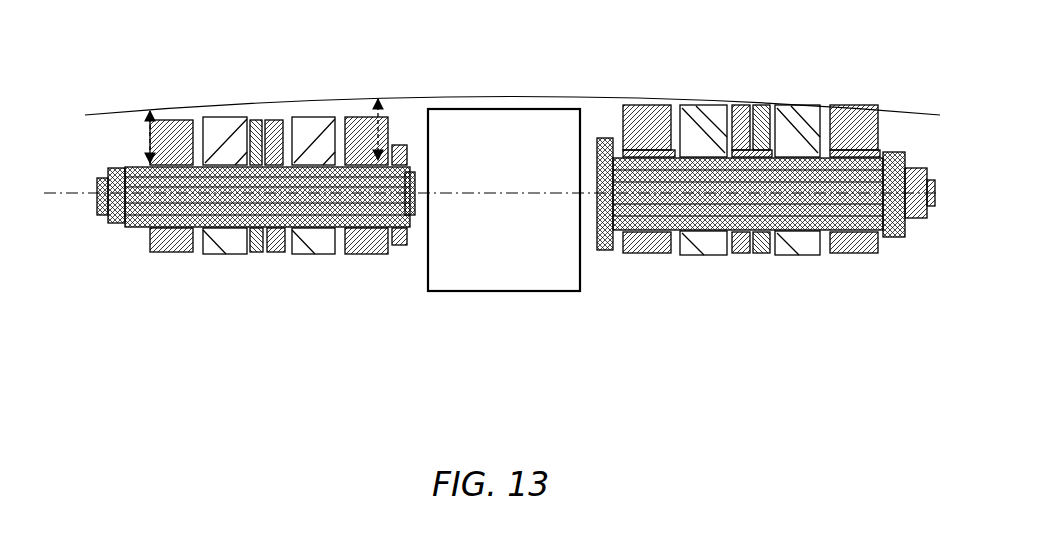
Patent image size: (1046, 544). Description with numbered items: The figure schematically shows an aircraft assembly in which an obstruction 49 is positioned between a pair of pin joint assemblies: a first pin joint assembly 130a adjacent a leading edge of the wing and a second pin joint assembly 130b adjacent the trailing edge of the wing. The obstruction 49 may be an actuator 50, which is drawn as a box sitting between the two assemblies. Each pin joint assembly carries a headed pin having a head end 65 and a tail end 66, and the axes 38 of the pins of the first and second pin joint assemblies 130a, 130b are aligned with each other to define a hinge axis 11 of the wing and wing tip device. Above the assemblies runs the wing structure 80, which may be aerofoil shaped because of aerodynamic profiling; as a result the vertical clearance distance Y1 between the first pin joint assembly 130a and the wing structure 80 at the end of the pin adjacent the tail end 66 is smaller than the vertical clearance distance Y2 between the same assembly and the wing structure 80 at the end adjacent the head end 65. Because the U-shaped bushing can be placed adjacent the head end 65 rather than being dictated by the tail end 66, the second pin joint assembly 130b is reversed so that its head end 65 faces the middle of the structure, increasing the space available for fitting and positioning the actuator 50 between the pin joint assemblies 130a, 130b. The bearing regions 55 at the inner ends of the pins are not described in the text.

The hinge axis 11 is at (297, 188).
The axis 38 is at (85, 192).
The obstruction 49 is at (523, 265).
The actuator 50 is at (503, 133).
The bearing 55 is at (415, 178).
The head end 65 is at (392, 210).
The tail end 66 is at (117, 202).
The wing structure 80 is at (618, 97).
The first pin joint assembly 130a is at (256, 209).
The second pin joint assembly 130b is at (747, 295).
The vertical clearance distance Y1 is at (160, 118).
The vertical clearance distance Y2 is at (377, 127).